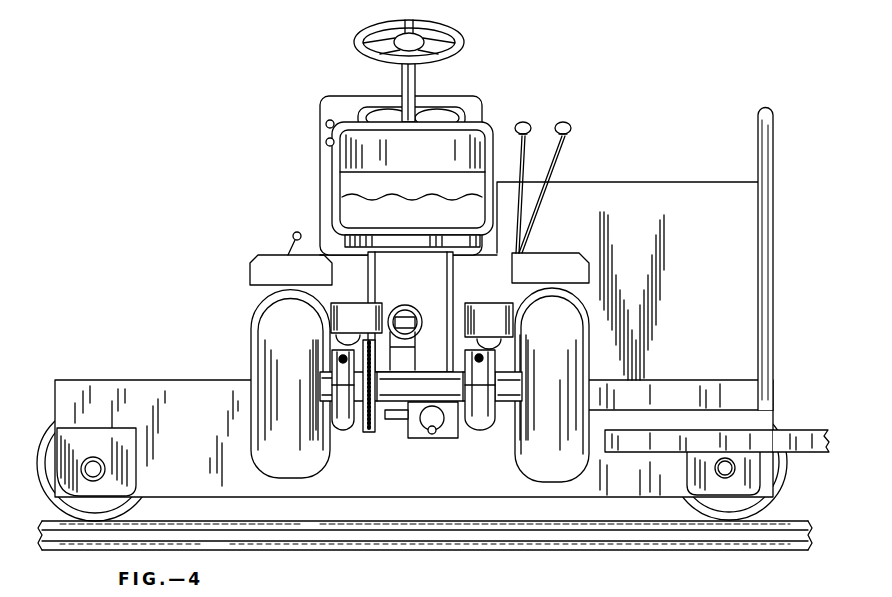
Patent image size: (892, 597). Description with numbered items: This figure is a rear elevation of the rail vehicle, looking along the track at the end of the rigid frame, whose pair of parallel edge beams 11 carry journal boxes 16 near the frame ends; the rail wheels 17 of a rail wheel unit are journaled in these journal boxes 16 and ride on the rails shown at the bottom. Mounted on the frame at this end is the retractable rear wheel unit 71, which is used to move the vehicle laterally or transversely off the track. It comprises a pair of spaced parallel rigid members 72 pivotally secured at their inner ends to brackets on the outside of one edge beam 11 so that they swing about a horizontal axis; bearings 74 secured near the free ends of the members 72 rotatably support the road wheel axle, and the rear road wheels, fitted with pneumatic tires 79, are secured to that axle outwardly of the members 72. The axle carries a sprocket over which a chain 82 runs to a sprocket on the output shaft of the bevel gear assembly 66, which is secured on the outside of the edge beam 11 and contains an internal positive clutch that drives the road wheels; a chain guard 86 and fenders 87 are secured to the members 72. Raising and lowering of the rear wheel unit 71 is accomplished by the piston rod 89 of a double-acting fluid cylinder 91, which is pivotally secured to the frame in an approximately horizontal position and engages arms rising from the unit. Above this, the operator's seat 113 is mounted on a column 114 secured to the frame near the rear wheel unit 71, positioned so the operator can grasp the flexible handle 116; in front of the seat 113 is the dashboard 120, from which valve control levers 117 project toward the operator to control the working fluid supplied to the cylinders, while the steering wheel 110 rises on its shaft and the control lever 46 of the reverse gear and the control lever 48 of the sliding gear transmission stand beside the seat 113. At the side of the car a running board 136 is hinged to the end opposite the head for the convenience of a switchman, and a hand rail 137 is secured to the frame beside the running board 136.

The steering wheel 110 is at (461, 42).
The dashboard 120 is at (456, 113).
The seat 113 is at (492, 128).
The control lever 46 is at (532, 128).
The control lever 48 is at (572, 128).
The hand rail 137 is at (768, 147).
The valve control levers 117 is at (326, 141).
The flexible handle 116 is at (295, 230).
The fenders 87 is at (258, 266).
The pneumatic tires 79 is at (558, 320).
The column 114 is at (453, 281).
The piston rod 89 is at (402, 310).
The double-acting fluid cylinder 91 is at (416, 322).
The rigid members 72 is at (489, 338).
The chain guard 86 is at (365, 327).
The edge beams 11 is at (100, 386).
The rail wheels 17 is at (46, 432).
The journal boxes 16 is at (103, 449).
The bearings 74 is at (345, 402).
The chain 82 is at (369, 424).
The rear wheel unit 71 is at (413, 383).
The bevel gear assembly 66 is at (433, 441).
The running board 136 is at (792, 430).